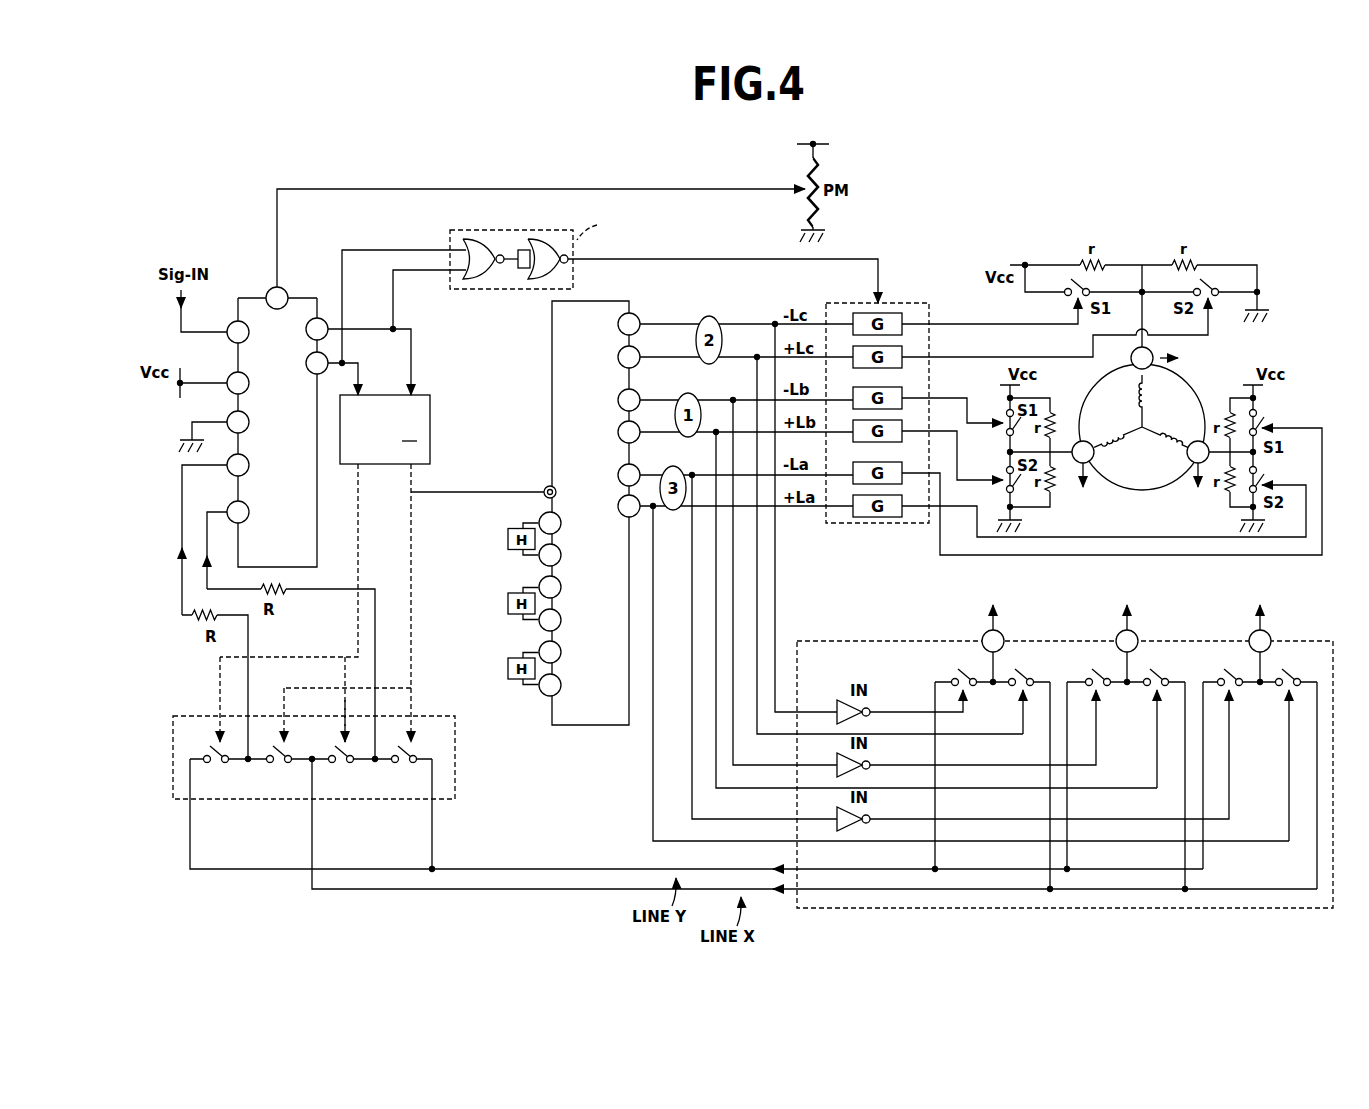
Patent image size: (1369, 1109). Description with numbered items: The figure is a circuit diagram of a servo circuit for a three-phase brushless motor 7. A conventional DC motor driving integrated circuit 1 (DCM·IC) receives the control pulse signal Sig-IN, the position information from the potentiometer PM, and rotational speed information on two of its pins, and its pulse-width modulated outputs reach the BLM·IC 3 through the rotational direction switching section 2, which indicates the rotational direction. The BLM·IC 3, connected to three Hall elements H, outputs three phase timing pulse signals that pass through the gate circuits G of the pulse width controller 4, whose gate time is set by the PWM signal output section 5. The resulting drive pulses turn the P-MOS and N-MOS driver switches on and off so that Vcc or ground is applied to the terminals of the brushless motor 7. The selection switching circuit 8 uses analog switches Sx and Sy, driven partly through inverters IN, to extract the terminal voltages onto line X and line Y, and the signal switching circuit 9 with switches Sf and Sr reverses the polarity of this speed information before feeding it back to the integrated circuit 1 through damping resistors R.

The DC motor driving integrated circuit (DCM·IC) 1 is at (298, 293).
The rotational direction switching section 2 is at (432, 427).
The integrated circuit (BLM·IC) 3 is at (598, 301).
The pulse width controller 4 is at (897, 303).
The PWM signal output section 5 is at (490, 237).
The brushless motor 7 is at (1133, 489).
The selection switching circuit 8 is at (1210, 908).
The signal switching circuit 9 is at (455, 722).